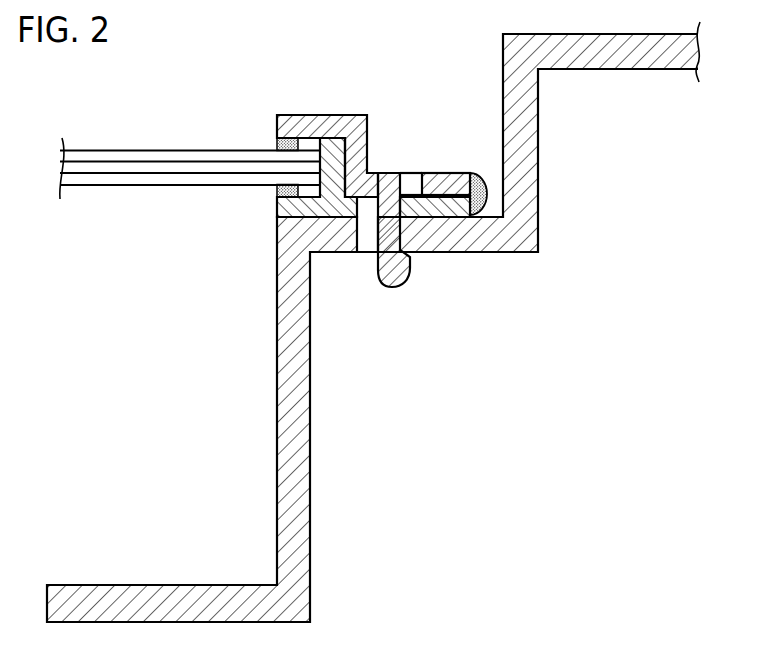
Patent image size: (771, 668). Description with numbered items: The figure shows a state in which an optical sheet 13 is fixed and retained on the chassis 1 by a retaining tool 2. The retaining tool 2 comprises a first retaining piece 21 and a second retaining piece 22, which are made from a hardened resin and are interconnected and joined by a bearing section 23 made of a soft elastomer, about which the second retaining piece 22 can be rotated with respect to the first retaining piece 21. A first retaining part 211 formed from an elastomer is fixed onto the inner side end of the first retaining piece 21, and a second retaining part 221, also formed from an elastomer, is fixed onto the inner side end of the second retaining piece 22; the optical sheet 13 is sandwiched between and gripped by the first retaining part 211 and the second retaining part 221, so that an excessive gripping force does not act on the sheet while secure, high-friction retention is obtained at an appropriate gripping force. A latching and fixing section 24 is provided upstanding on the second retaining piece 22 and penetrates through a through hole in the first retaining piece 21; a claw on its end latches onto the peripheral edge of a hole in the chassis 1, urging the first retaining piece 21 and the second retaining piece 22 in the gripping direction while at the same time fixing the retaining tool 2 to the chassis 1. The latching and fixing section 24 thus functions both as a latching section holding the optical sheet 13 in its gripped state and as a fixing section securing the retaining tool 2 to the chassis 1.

The chassis 1 is at (307, 412).
The retaining tool 2 is at (306, 76).
The optical sheet 13 is at (113, 151).
The first retaining piece 21 is at (275, 212).
The second retaining piece 22 is at (358, 113).
The bearing section 23 is at (478, 175).
The latching and fixing section 24 is at (400, 277).
The first retaining part 211 is at (272, 188).
The second retaining part 221 is at (274, 143).